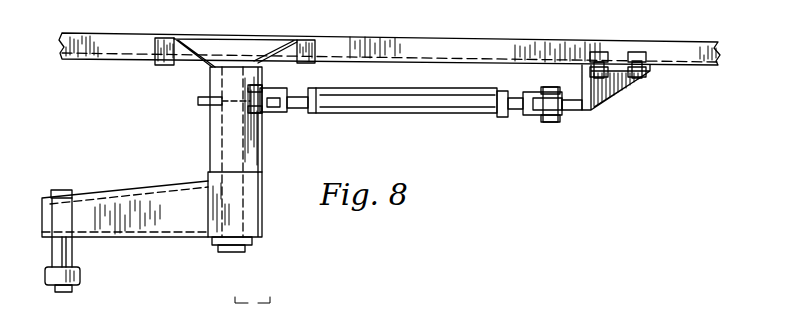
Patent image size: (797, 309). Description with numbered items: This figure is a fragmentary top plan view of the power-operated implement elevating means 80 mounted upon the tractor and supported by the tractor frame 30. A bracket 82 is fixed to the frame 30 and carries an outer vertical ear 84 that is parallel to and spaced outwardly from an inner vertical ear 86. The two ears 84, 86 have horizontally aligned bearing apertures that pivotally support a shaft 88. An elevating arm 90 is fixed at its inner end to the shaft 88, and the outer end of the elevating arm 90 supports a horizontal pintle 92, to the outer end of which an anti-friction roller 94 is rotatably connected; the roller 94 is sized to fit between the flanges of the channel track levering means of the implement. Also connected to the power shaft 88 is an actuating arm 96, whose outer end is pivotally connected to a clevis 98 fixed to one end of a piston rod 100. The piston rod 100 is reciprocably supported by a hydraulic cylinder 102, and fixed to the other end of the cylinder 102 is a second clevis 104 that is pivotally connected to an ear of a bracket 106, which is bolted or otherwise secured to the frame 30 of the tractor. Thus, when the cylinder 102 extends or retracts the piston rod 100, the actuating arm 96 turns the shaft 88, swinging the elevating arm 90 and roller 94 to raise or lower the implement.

The frame 30 is at (683, 42).
The implement elevating means 80 is at (273, 171).
The bracket 82 is at (212, 132).
The outer vertical ear 84 is at (254, 247).
The inner vertical ear 86 is at (222, 69).
The shaft 88 is at (220, 158).
The elevating arm 90 is at (141, 196).
The horizontal pintle 92 is at (73, 249).
The anti-friction roller 94 is at (48, 281).
The actuating arm 96 is at (198, 100).
The clevis 98 is at (280, 94).
The piston rod 100 is at (298, 108).
The hydraulic cylinder 102 is at (433, 114).
The clevis 104 is at (533, 115).
The bracket 106 is at (580, 106).